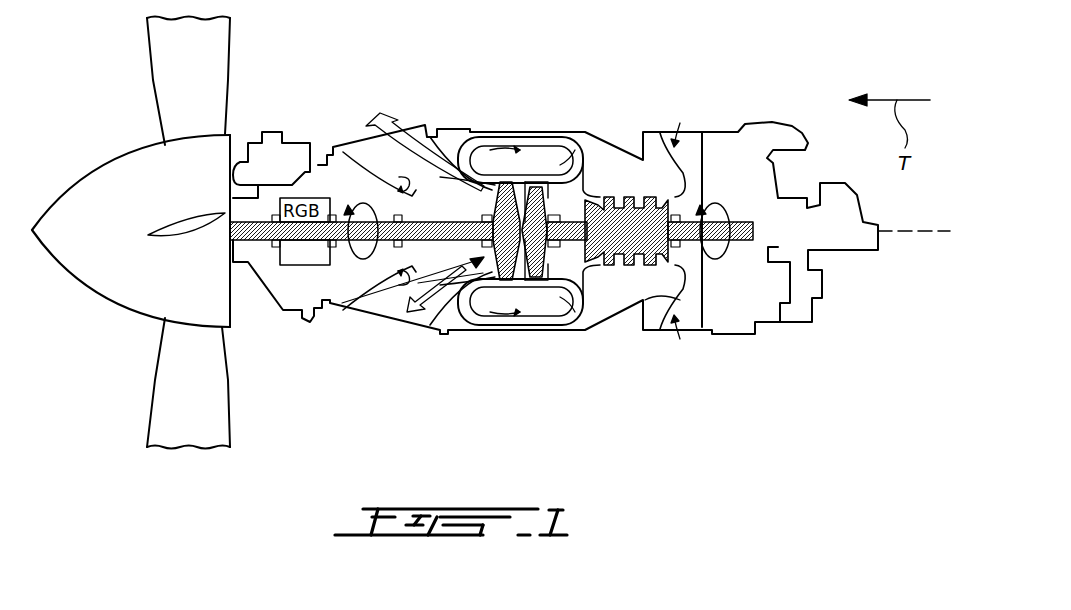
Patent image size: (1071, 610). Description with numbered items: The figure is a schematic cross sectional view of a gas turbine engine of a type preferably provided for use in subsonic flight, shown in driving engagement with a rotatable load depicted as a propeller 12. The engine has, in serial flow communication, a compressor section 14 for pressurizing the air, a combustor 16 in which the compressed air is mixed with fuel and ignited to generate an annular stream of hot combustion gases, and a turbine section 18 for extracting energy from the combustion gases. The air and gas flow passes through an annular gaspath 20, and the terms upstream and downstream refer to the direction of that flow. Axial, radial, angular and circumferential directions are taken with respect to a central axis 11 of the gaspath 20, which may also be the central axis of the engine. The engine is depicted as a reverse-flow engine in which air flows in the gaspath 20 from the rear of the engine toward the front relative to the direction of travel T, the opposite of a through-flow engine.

The central axis 11 is at (905, 240).
The propeller 12 is at (207, 37).
The compressor section 14 is at (628, 176).
The combustor 16 is at (538, 316).
The turbine section 18 is at (475, 282).
The annular gaspath 20 is at (586, 306).